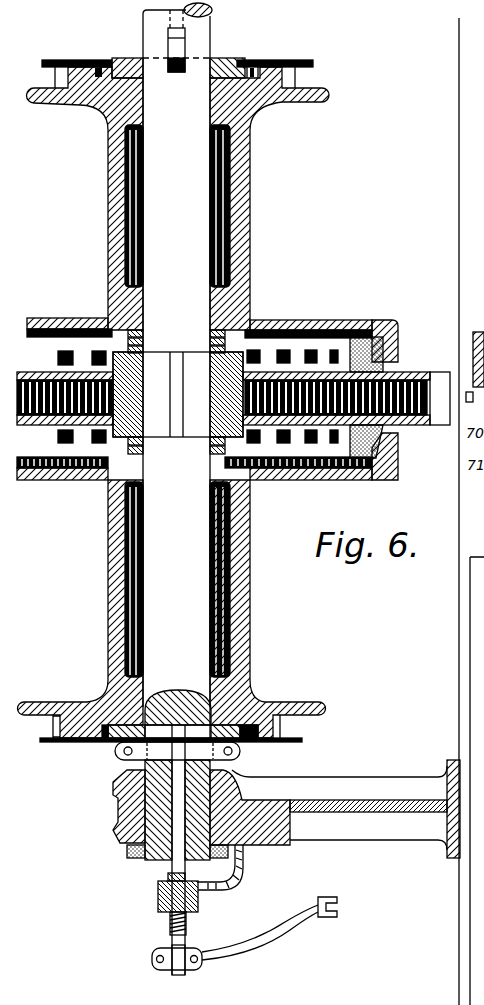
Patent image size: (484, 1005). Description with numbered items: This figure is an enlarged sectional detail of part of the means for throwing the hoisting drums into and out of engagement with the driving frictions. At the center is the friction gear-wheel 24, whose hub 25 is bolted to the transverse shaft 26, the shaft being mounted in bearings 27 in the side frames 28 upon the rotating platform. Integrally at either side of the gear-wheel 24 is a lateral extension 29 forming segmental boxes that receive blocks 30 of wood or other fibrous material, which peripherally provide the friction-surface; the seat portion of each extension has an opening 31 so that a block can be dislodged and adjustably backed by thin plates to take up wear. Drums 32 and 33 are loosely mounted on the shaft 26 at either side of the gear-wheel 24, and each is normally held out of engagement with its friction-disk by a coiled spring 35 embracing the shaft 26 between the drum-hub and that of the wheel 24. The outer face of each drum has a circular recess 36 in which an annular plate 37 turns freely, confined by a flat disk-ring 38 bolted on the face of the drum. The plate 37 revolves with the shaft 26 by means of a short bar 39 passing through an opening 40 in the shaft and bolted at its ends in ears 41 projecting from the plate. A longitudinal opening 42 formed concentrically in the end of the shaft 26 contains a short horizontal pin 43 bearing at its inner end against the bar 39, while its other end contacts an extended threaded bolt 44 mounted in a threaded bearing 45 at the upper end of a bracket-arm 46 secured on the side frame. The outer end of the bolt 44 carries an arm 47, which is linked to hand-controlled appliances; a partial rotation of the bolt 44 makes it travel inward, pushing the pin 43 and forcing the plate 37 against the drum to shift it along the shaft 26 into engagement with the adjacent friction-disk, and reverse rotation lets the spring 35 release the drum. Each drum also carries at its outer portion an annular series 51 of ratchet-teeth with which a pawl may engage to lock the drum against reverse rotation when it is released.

The friction gear-wheel 24 is at (55, 376).
The hub 25 is at (80, 320).
The transverse shaft 26 is at (177, 355).
The bearings 27 is at (115, 822).
The side frames 28 is at (367, 812).
The lateral extension 29 is at (388, 330).
The blocks 30 is at (366, 336).
The opening 31 is at (310, 350).
The drum 32 is at (117, 618).
The drum 33 is at (112, 256).
The coiled spring 35 is at (128, 447).
The circular recess 36 is at (100, 727).
The annular plate 37 is at (250, 726).
The flat disk-ring 38 is at (67, 743).
The short bar 39 is at (177, 48).
The opening 40 is at (163, 733).
The ears 41 is at (120, 746).
The longitudinal opening 42 is at (158, 900).
The pin 43 is at (168, 862).
The threaded bolt 44 is at (163, 940).
The threaded bearing 45 is at (160, 912).
The bracket-arm 46 is at (398, 350).
The arm 47 is at (233, 952).
The annular series of ratchet-teeth 51 is at (50, 727).